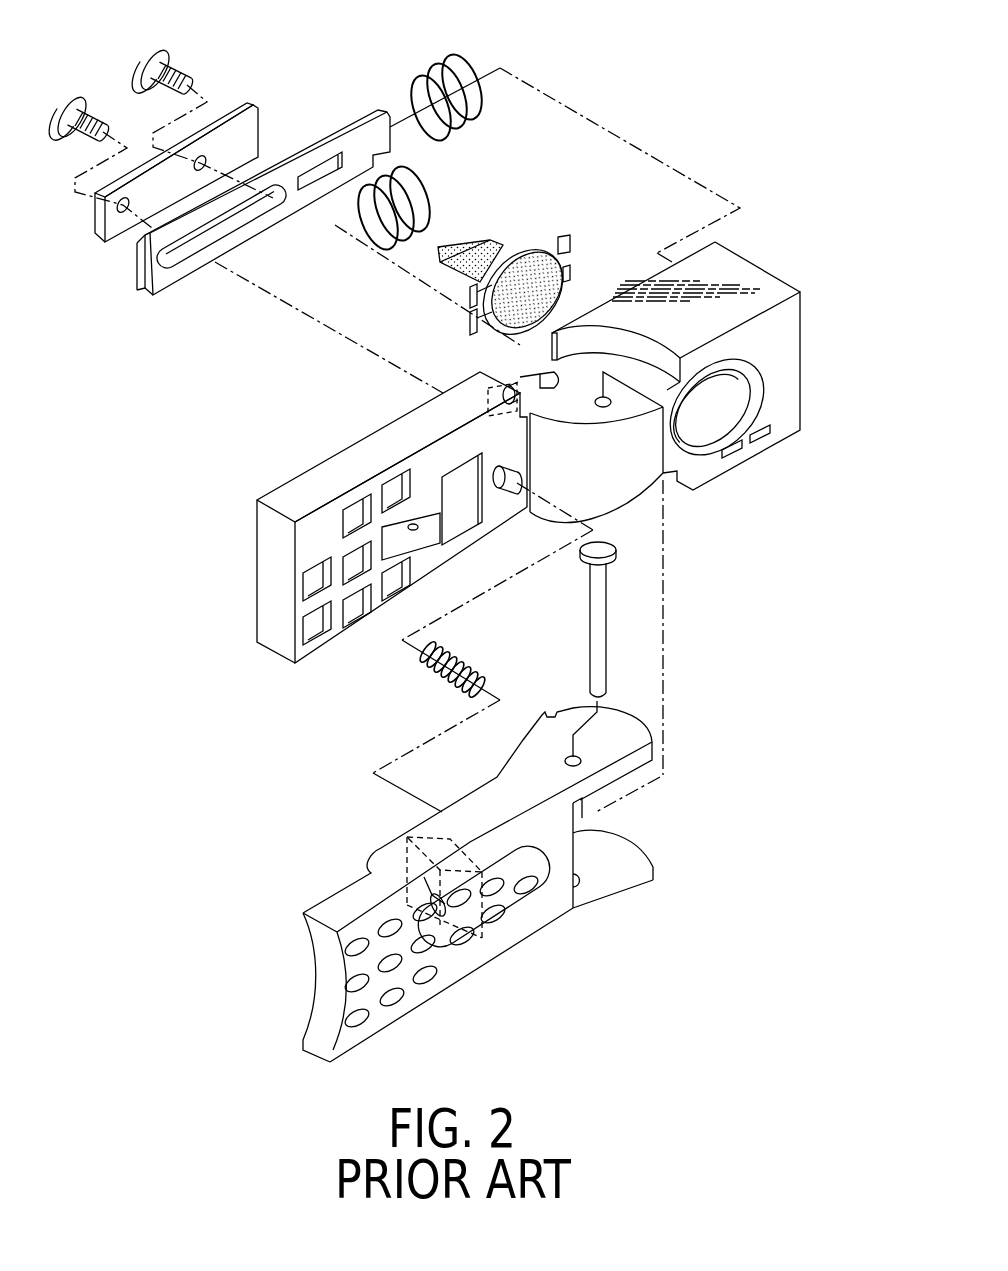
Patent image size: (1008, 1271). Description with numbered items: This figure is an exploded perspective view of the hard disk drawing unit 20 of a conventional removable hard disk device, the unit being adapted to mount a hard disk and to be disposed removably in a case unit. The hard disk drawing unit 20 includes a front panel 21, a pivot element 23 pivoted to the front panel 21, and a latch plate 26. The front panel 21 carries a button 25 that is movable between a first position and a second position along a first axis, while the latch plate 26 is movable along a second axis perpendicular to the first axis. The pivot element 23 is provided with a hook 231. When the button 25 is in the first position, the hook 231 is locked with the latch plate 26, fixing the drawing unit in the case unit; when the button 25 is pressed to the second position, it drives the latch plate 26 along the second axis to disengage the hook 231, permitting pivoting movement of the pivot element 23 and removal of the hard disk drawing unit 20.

The hard disk drawing unit 20 is at (660, 322).
The front panel 21 is at (782, 268).
The pivot element 23 is at (461, 884).
The hook 231 is at (405, 830).
The button 25 is at (533, 240).
The latch plate 26 is at (340, 117).